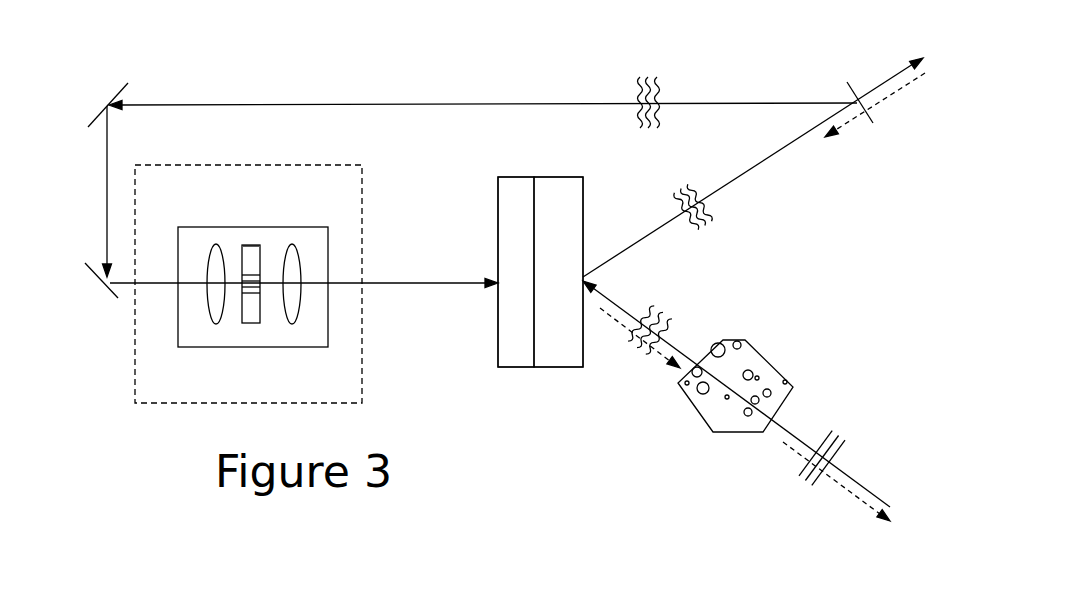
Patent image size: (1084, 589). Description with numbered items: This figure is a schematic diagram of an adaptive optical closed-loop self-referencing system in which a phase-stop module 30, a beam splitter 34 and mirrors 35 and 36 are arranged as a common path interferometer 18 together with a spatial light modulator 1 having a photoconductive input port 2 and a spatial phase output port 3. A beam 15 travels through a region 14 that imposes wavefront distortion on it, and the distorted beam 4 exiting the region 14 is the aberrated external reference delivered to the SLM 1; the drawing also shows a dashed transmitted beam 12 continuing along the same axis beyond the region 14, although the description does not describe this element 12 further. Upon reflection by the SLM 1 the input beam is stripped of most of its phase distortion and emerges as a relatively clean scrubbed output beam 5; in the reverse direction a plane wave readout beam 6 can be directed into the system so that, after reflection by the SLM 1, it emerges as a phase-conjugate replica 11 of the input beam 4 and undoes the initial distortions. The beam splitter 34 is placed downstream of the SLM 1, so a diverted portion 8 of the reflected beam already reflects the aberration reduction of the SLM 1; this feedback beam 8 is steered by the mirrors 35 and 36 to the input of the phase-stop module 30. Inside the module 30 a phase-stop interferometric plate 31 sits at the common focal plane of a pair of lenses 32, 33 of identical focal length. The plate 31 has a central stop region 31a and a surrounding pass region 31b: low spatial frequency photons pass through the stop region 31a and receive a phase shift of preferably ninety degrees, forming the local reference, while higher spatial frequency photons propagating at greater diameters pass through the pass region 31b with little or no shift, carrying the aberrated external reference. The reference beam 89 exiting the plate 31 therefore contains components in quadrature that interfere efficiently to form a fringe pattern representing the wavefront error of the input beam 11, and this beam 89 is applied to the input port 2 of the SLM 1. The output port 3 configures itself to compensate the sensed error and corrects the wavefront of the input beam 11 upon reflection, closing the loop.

The spatial light modulator 1 is at (527, 379).
The photoconductive input port 2 is at (523, 187).
The spatial phase output port 3 is at (565, 198).
The distorted input beam 4 is at (619, 302).
The scrubbed output beam 5 is at (703, 192).
The readout beam 6 is at (883, 103).
The feedback beam 8 is at (637, 80).
The aberrated input beam 11 is at (615, 318).
The transmitted beam 12 is at (863, 502).
The region 14 is at (765, 360).
The beam 15 is at (867, 483).
The common path interferometer 18 is at (362, 195).
The phase-stop module 30 is at (319, 340).
The phase-stop interferometric plate 31 is at (242, 336).
The first region 31a is at (260, 287).
The second region 31b is at (250, 250).
The lens 32 is at (215, 247).
The lens 33 is at (290, 248).
The beam splitter 34 is at (855, 88).
The mirror 35 is at (97, 113).
The mirror 36 is at (93, 287).
The reference beam 89 is at (380, 277).